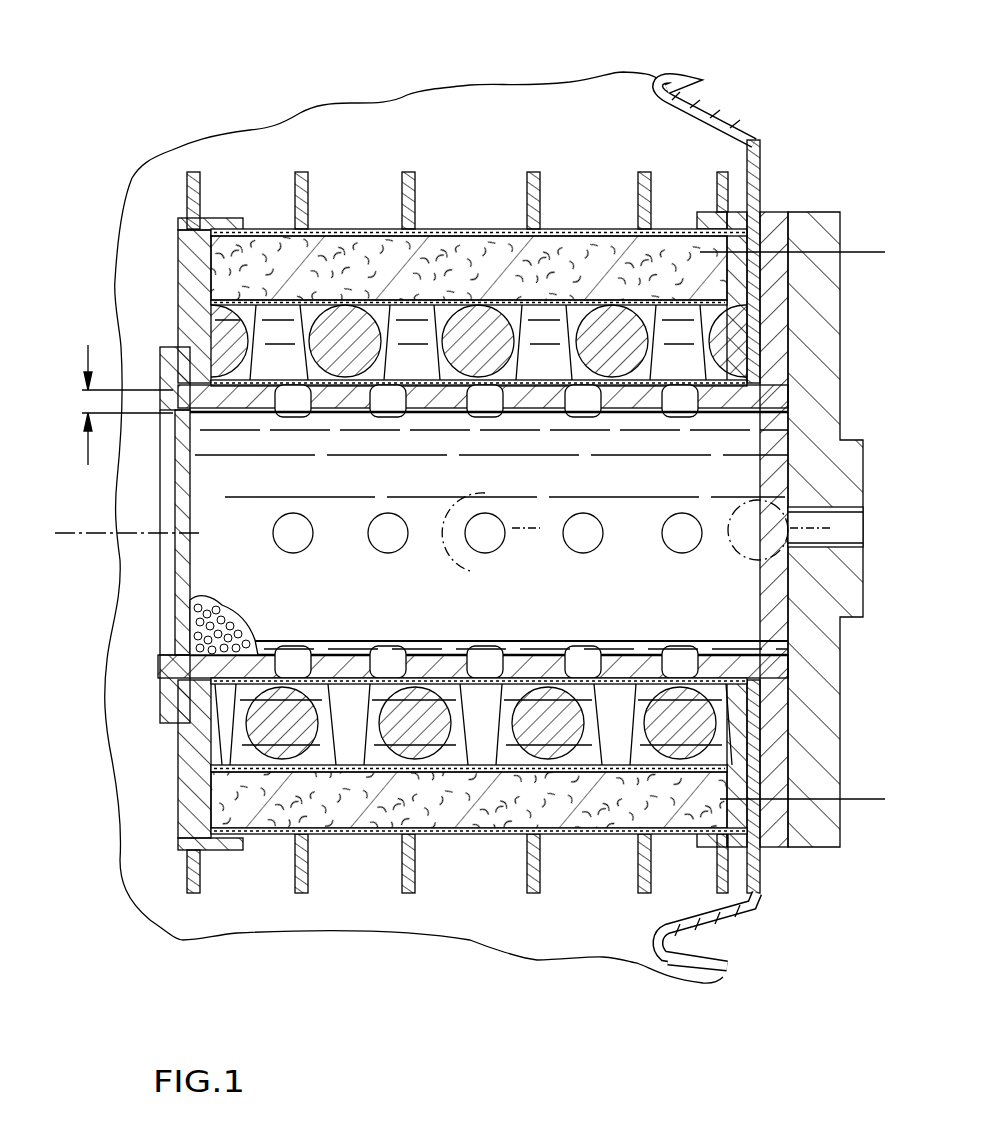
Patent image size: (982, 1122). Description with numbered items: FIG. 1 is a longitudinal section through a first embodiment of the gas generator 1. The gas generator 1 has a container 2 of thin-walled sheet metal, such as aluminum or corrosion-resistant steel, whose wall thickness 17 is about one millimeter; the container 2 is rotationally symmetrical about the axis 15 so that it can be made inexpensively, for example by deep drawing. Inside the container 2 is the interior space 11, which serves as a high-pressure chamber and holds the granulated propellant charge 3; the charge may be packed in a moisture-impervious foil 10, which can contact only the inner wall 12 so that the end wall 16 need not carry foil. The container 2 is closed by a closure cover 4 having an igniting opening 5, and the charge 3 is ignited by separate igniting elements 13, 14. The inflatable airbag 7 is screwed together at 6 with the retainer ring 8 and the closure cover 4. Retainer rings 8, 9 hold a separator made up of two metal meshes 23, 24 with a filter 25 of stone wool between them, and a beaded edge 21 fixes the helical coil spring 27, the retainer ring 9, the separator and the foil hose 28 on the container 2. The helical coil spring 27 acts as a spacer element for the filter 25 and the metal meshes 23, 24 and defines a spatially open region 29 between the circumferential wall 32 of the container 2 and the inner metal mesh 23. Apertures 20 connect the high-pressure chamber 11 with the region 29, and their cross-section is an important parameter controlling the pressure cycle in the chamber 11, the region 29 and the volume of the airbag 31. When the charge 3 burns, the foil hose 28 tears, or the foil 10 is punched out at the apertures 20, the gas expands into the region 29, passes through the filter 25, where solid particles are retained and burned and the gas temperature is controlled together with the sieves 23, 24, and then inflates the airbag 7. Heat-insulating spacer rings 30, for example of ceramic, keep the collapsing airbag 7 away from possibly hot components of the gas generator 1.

The gas generator 1 is at (622, 115).
The container 2 is at (180, 471).
The granulated propellant charge 3 is at (188, 626).
The closure cover 4 is at (808, 218).
The igniting opening 5 is at (850, 537).
The screw connection 6 is at (858, 250).
The inflatable airbag 7 is at (750, 132).
The retainer ring 8 is at (760, 146).
The retainer ring 9 is at (198, 229).
The moisture-impervious foil 10 is at (274, 656).
The interior space (high-pressure chamber) 11 is at (748, 608).
The inner wall 12 is at (545, 650).
The igniting element 13 is at (448, 562).
The igniting element 14 is at (750, 558).
The axis 15 is at (92, 548).
The end wall 16 is at (192, 484).
The wall thickness 17 is at (82, 396).
The apertures 20 is at (592, 414).
The beaded edge 21 is at (158, 695).
The metal mesh 23 is at (586, 834).
The metal mesh 24 is at (679, 834).
The filter 25 is at (354, 232).
The helical coil spring (spacer element) 27 is at (434, 300).
The foil hose 28 is at (374, 745).
The spatially open region 29 is at (481, 735).
The spacer rings 30 is at (638, 198).
The airbag volume 31 is at (592, 930).
The circumferential wall 32 is at (205, 398).